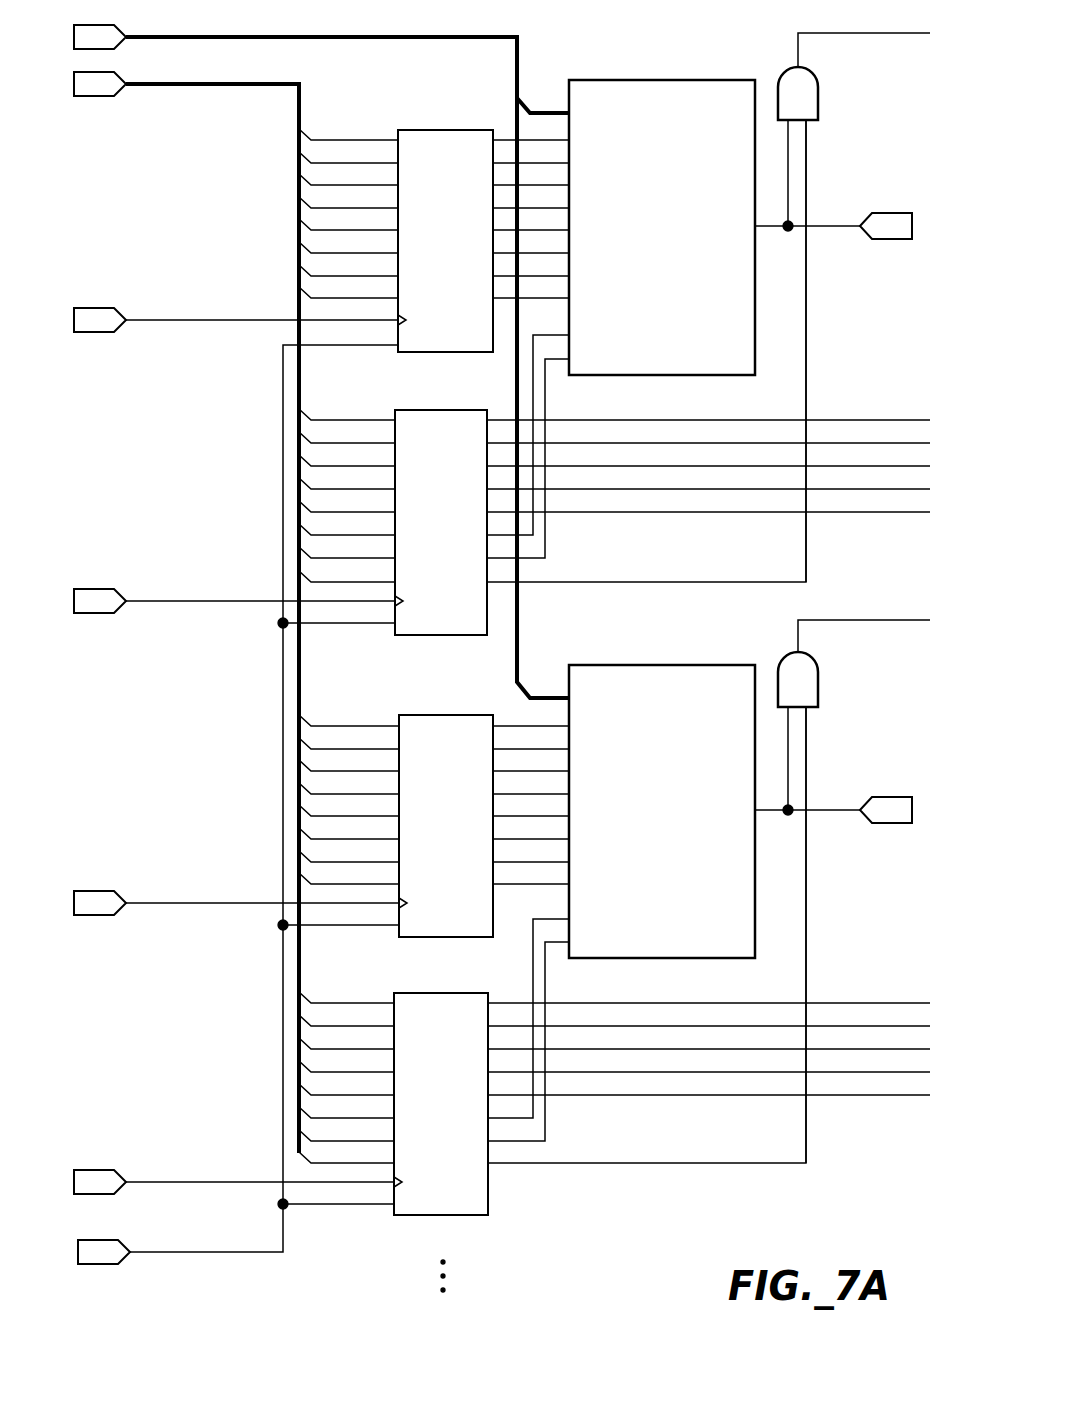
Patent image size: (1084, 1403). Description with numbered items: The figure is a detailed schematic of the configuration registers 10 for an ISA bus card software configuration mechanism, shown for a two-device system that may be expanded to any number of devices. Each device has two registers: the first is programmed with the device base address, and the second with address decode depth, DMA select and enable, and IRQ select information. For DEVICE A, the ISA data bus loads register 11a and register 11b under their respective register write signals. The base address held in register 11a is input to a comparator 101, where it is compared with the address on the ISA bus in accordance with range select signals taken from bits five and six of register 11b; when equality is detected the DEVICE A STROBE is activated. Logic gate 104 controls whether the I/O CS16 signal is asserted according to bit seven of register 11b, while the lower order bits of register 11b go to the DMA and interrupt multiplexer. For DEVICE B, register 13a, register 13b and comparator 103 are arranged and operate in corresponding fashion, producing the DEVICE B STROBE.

The configuration registers 10 is at (577, 44).
The register 11a is at (438, 129).
The register 11b is at (438, 409).
The register 13a is at (440, 714).
The register 13b is at (440, 992).
The comparator 101 is at (660, 79).
The comparator 103 is at (660, 664).
The logic gate 104 is at (820, 92).